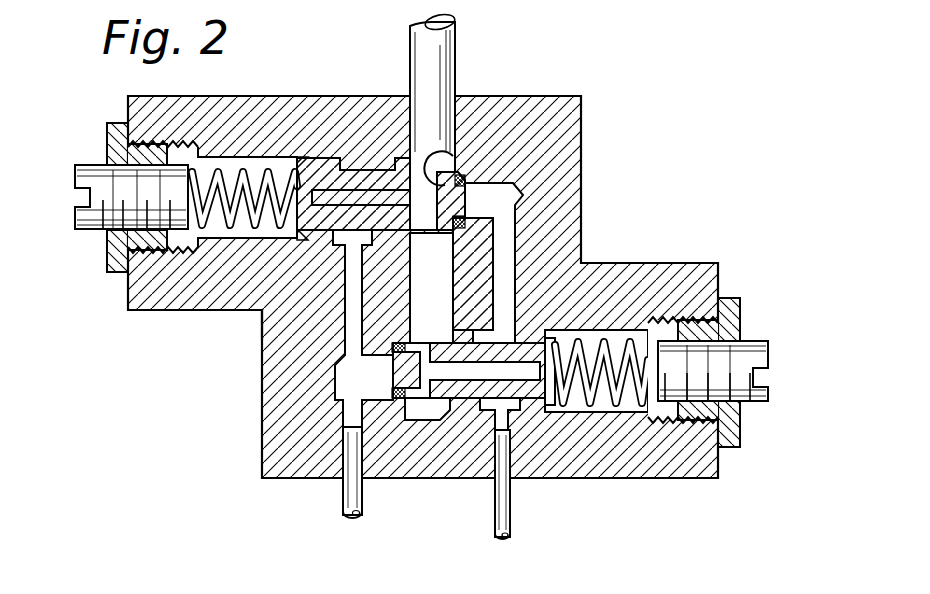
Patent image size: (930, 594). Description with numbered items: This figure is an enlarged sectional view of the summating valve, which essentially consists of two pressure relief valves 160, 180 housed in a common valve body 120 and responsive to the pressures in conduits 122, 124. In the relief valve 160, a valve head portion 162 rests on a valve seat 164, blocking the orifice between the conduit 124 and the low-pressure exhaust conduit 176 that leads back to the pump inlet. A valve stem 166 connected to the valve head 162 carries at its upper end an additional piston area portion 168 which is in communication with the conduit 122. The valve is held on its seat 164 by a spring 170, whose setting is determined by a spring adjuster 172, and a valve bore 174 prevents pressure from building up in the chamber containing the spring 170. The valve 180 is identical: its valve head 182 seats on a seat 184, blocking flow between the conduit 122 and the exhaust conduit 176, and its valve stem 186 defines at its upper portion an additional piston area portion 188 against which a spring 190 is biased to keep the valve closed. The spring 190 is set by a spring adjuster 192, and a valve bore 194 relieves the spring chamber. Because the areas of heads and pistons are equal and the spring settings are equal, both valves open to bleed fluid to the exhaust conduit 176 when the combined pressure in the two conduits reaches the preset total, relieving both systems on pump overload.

The valve body 120 is at (555, 113).
The conduit 122 is at (508, 232).
The conduit 124 is at (345, 502).
The pressure relief valve 160 is at (544, 418).
The valve head portion 162 is at (378, 393).
The valve seat 164 is at (390, 352).
The valve stem 166 is at (463, 400).
The additional piston area portion 168 is at (515, 330).
The spring 170 is at (617, 405).
The spring adjuster 172 is at (735, 357).
The valve bore 174 is at (447, 343).
The low-pressure exhaust conduit 176 is at (440, 271).
The pressure relief valve 180 is at (318, 158).
The valve head 182 is at (449, 150).
The seat 184 is at (465, 172).
The valve stem 186 is at (340, 172).
The additional piston area portion 188 is at (223, 299).
The spring 190 is at (237, 172).
The spring adjuster 192 is at (98, 173).
The valve bore 194 is at (383, 197).